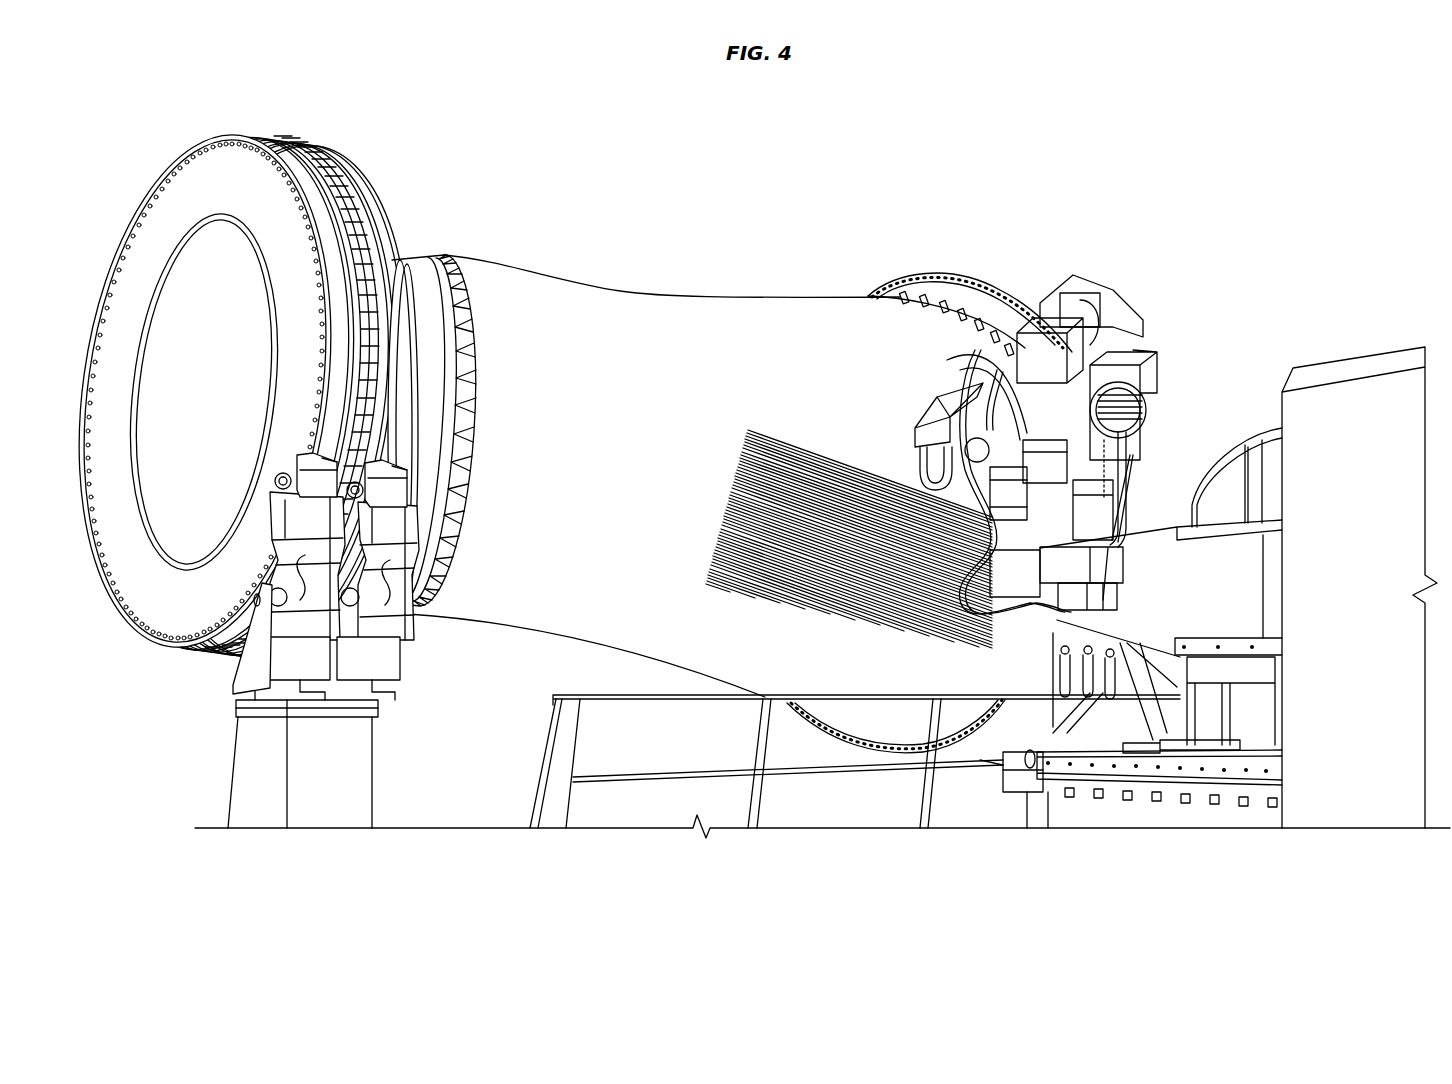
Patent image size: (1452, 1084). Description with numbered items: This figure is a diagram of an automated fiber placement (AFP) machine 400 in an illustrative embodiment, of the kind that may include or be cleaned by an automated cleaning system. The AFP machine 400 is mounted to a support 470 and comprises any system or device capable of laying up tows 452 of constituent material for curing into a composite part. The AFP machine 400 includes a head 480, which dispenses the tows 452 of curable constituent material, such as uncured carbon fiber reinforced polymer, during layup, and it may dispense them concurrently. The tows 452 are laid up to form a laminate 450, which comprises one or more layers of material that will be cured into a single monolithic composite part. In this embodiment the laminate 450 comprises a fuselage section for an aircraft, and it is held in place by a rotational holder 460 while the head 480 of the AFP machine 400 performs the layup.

The AFP machine 400 is at (749, 478).
The laminate 450 is at (697, 313).
The tows 452 is at (737, 512).
The rotational holder 460 is at (260, 792).
The support 470 is at (1157, 548).
The head 480 is at (950, 400).